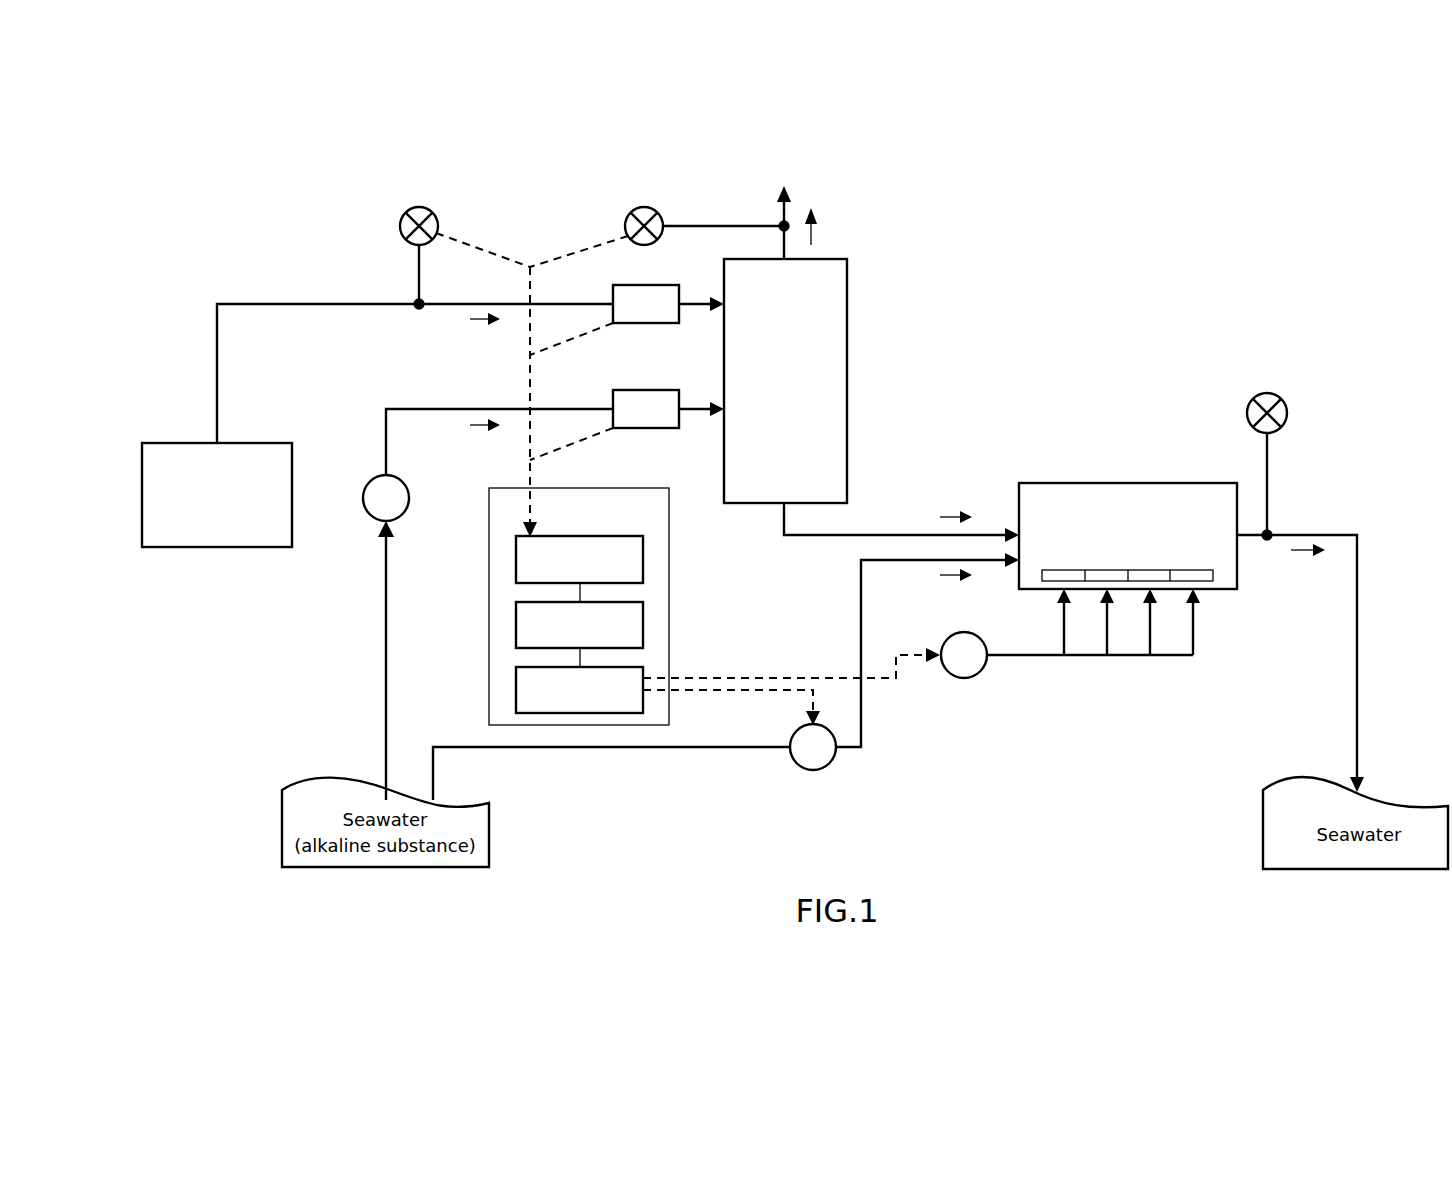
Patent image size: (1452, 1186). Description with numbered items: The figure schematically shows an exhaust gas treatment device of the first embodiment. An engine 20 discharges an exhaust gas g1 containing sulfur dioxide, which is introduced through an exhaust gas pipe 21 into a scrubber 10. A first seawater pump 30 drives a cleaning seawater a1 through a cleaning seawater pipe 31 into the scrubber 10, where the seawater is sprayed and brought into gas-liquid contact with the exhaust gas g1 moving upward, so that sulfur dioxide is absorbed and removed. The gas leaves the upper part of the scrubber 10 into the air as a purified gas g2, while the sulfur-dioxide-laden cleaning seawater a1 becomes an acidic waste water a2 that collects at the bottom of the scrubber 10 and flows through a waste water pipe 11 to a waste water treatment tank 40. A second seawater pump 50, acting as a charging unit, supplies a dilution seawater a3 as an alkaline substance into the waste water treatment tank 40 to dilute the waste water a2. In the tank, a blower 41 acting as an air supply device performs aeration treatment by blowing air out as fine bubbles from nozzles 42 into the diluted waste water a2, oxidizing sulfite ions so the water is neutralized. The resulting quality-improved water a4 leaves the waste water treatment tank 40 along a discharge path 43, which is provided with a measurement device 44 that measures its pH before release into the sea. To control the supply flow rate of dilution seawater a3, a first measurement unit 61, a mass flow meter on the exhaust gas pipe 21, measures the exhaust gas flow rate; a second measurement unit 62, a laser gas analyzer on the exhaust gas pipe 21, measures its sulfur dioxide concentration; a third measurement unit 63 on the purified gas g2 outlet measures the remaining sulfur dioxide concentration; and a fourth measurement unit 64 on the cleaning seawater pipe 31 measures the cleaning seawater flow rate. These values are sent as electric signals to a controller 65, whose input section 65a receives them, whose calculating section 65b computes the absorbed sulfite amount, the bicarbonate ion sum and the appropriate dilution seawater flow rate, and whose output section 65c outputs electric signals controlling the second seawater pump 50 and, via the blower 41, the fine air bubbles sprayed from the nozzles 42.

The scrubber 10 is at (847, 290).
The waste water pipe 11 is at (877, 533).
The engine 20 is at (173, 443).
The exhaust gas pipe 21 is at (257, 302).
The first seawater pump 30 is at (398, 478).
The cleaning seawater pipe 31 is at (400, 408).
The waste water treatment tank 40 is at (1150, 483).
The blower 41 is at (963, 680).
The nozzles 42 is at (1213, 576).
The discharge path 43 is at (1318, 535).
The measurement device 44 is at (1262, 395).
The second seawater pump 50 is at (812, 770).
The first measurement unit 61 is at (652, 283).
The second measurement unit 62 is at (435, 212).
The third measurement unit 63 is at (660, 212).
The fourth measurement unit 64 is at (650, 388).
The controller 65 is at (632, 487).
The input section 65a is at (516, 556).
The calculating section 65b is at (516, 622).
The output section 65c is at (516, 692).
The exhaust gas g1 is at (478, 322).
The purified gas g2 is at (812, 230).
The cleaning seawater a1 is at (478, 428).
The waste water a2 is at (950, 512).
The dilution seawater a3 is at (948, 580).
The quality-improved water a4 is at (1299, 553).